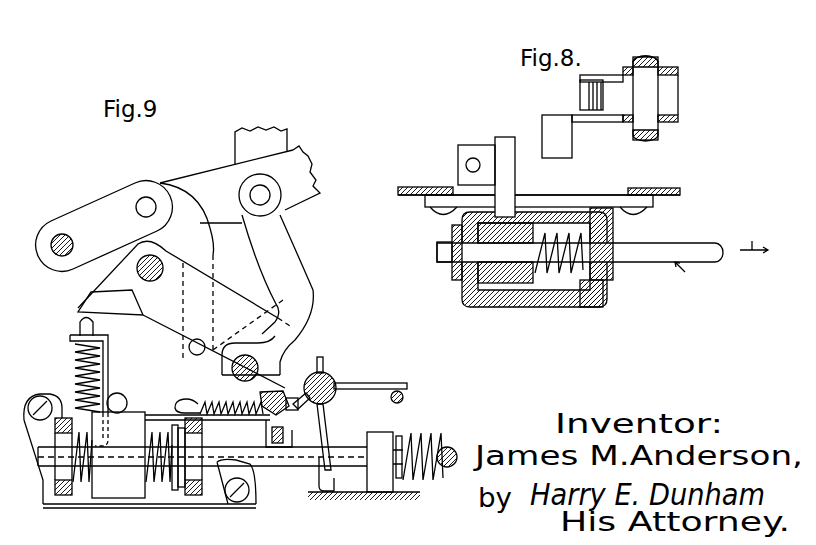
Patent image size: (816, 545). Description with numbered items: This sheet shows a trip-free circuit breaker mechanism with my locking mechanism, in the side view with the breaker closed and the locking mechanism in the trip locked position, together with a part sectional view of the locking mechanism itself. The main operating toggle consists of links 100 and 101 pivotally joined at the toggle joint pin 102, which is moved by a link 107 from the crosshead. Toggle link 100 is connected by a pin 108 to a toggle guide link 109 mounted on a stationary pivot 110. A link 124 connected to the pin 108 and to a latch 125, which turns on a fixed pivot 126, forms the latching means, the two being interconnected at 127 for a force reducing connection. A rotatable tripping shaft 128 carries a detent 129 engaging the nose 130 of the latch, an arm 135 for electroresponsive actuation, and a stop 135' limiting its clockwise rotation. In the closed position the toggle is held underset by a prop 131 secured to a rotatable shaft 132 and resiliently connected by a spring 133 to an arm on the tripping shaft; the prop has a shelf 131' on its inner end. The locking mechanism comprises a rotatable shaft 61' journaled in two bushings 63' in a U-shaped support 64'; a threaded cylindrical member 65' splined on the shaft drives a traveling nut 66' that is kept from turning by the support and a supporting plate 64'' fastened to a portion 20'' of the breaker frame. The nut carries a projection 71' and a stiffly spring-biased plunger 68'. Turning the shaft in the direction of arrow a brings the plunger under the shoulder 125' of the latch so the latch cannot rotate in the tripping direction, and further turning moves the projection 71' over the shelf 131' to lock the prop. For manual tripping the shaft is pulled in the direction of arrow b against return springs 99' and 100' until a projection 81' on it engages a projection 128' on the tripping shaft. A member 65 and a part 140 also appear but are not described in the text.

In FIG. 9, the toggle guide link 109 is at (87, 200).
In FIG. 9, the stationary pivot 110 is at (58, 234).
In FIG. 9, the pin 108 is at (147, 197).
In FIG. 9, the link 107 is at (250, 130).
In FIG. 9, the toggle link 100 is at (226, 185).
In FIG. 9, the toggle link 101 is at (299, 150).
In FIG. 9, the toggle joint pin 102 is at (249, 195).
In FIG. 9, the link 124 is at (214, 258).
In FIG. 9, the fixed pivot 126 is at (137, 269).
In FIG. 9, the latch 125 is at (185, 314).
In FIG. 9, the shoulder 125' is at (114, 314).
In FIG. 9, the prop 131 is at (282, 298).
In FIG. 8, the prop 131 is at (670, 98).
In FIG. 9, the interconnection 127 is at (189, 352).
In FIG. 9, the spring-biased plunger 68' is at (76, 381).
In FIG. 8, the spring-biased plunger 68' is at (459, 163).
In FIG. 9, the projection 71' is at (131, 397).
In FIG. 8, the projection 71' is at (506, 164).
In FIG. 9, the spring 133 is at (194, 398).
In FIG. 9, the rotatable shaft 61' is at (220, 454).
In FIG. 8, the rotatable shaft 61' is at (580, 242).
In FIG. 9, the return spring 100' is at (430, 446).
In FIG. 9, the bushings 63' is at (125, 471).
In FIG. 8, the bushings 63' is at (527, 252).
In FIG. 9, the threaded cylindrical member 65' is at (82, 478).
In FIG. 9, the traveling nut 66' is at (118, 469).
In FIG. 8, the traveling nut 66' is at (505, 281).
In FIG. 9, the tripping shaft 128 is at (336, 380).
In FIG. 9, the projection 128' is at (344, 431).
In FIG. 9, the arm 135 is at (376, 375).
In FIG. 9, the stop 135' is at (417, 395).
In FIG. 9, the detent member 129 is at (290, 393).
In FIG. 9, the latch nose 130 is at (259, 399).
In FIG. 9, the block 140 is at (284, 434).
In FIG. 9, the projection 81' is at (306, 475).
In FIG. 8, the circuit breaker frame portion 20'' is at (539, 178).
In FIG. 8, the supporting plate 64'' is at (539, 194).
In FIG. 8, the U-shaped support 64' is at (534, 275).
In FIG. 8, the shelf 131' is at (582, 116).
In FIG. 8, the rotatable shaft 132 is at (645, 57).
In FIG. 8, the spring 65 is at (559, 286).
In FIG. 8, the return spring 99' is at (591, 309).
In FIG. 8, the arrow a is at (681, 274).
In FIG. 8, the arrow b is at (754, 240).